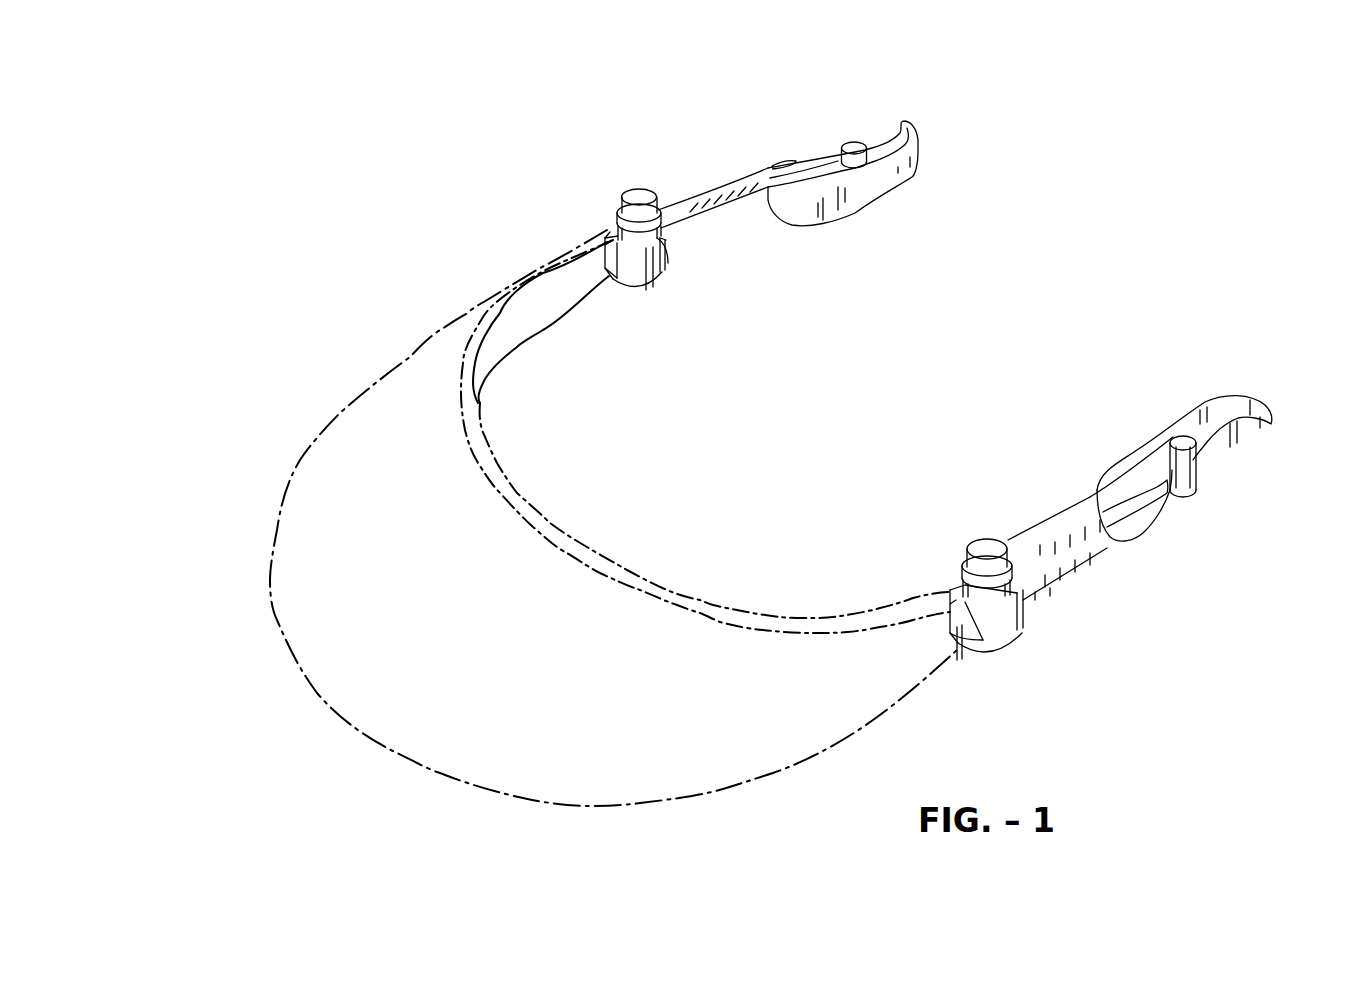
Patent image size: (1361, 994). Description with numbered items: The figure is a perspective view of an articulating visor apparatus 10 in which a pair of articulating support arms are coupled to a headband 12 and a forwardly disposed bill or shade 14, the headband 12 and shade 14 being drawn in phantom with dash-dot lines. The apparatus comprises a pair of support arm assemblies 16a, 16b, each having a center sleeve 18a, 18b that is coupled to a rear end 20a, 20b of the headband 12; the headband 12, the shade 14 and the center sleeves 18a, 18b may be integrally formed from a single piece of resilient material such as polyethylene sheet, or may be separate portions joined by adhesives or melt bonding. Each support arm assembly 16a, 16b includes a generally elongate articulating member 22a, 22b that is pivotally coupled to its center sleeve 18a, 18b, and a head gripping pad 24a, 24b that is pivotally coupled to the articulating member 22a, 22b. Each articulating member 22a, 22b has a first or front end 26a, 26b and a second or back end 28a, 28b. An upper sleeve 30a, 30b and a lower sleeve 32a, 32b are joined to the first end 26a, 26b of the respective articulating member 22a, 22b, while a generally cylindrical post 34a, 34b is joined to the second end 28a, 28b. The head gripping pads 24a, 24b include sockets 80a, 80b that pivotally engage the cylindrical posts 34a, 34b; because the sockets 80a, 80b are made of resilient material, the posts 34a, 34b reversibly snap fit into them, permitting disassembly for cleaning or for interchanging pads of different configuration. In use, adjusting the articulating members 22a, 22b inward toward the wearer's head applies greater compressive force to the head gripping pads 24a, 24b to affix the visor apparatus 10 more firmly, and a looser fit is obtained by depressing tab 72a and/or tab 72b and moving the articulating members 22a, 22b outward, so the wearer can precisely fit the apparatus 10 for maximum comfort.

The articulating visor apparatus 10 is at (345, 188).
The headband 12 is at (488, 332).
The shade 14 is at (292, 522).
The support arm assembly 16a is at (1190, 603).
The support arm assembly 16b is at (681, 100).
The center sleeve 18a is at (1020, 622).
The center sleeve 18b is at (660, 265).
The rear end 20a is at (958, 643).
The rear end 20b is at (608, 245).
The articulating member 22a is at (1060, 570).
The articulating member 22b is at (727, 193).
The head gripping pad 24a is at (1225, 396).
The head gripping pad 24b is at (916, 160).
The first end 26a is at (1038, 668).
The first end 26b is at (578, 200).
The second end 28a is at (1205, 515).
The second end 28b is at (837, 124).
The upper sleeve 30a is at (960, 576).
The upper sleeve 30b is at (657, 222).
The lower sleeve 32a is at (1028, 640).
The lower sleeve 32b is at (645, 290).
The cylindrical post 34a is at (1198, 449).
The cylindrical post 34b is at (841, 150).
The tab 72a is at (985, 538).
The tab 72b is at (633, 186).
The socket 80a is at (1198, 482).
The socket 80b is at (860, 143).